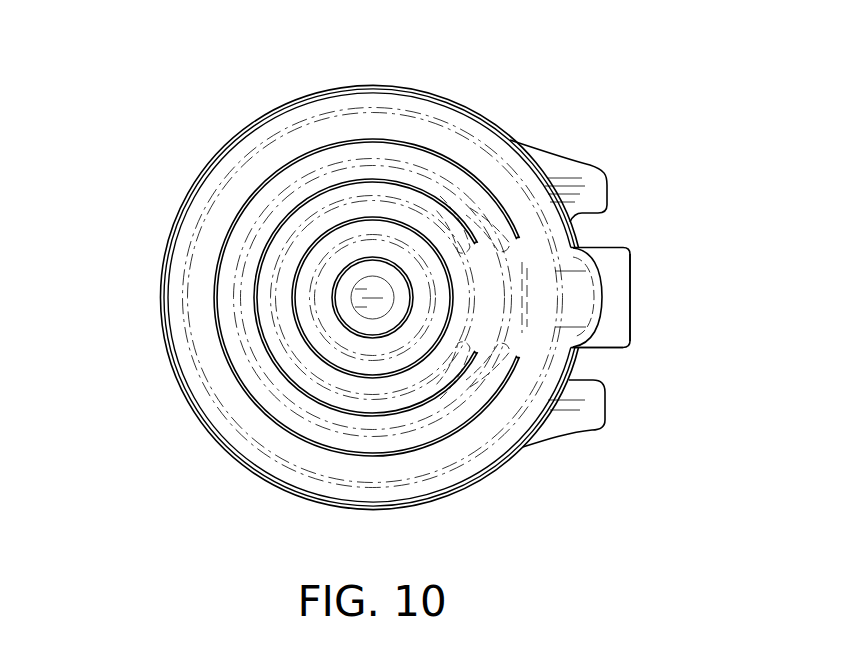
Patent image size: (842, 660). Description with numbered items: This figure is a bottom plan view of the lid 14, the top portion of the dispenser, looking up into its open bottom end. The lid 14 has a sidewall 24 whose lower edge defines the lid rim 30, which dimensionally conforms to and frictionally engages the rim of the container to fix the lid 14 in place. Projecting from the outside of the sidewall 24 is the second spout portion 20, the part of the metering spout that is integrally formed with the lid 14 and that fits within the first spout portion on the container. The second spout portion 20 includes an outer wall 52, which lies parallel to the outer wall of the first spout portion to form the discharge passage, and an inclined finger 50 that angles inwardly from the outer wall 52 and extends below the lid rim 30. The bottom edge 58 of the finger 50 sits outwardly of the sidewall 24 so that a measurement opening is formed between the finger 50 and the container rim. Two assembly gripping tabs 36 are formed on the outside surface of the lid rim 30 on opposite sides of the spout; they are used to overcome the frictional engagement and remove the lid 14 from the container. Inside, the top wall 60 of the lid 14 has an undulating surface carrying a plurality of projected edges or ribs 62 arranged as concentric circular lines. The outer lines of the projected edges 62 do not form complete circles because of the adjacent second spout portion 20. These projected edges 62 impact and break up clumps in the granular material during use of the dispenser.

The lid 14 is at (157, 165).
The second spout portion 20 is at (640, 354).
The sidewall 24 is at (470, 108).
The lid rim 30 is at (380, 96).
The gripping tabs 36 is at (588, 177).
The finger 50 is at (618, 322).
The outer wall 52 is at (630, 296).
The bottom edge 58 is at (603, 296).
The top wall 60 is at (490, 303).
The projected edges 62 is at (332, 302).